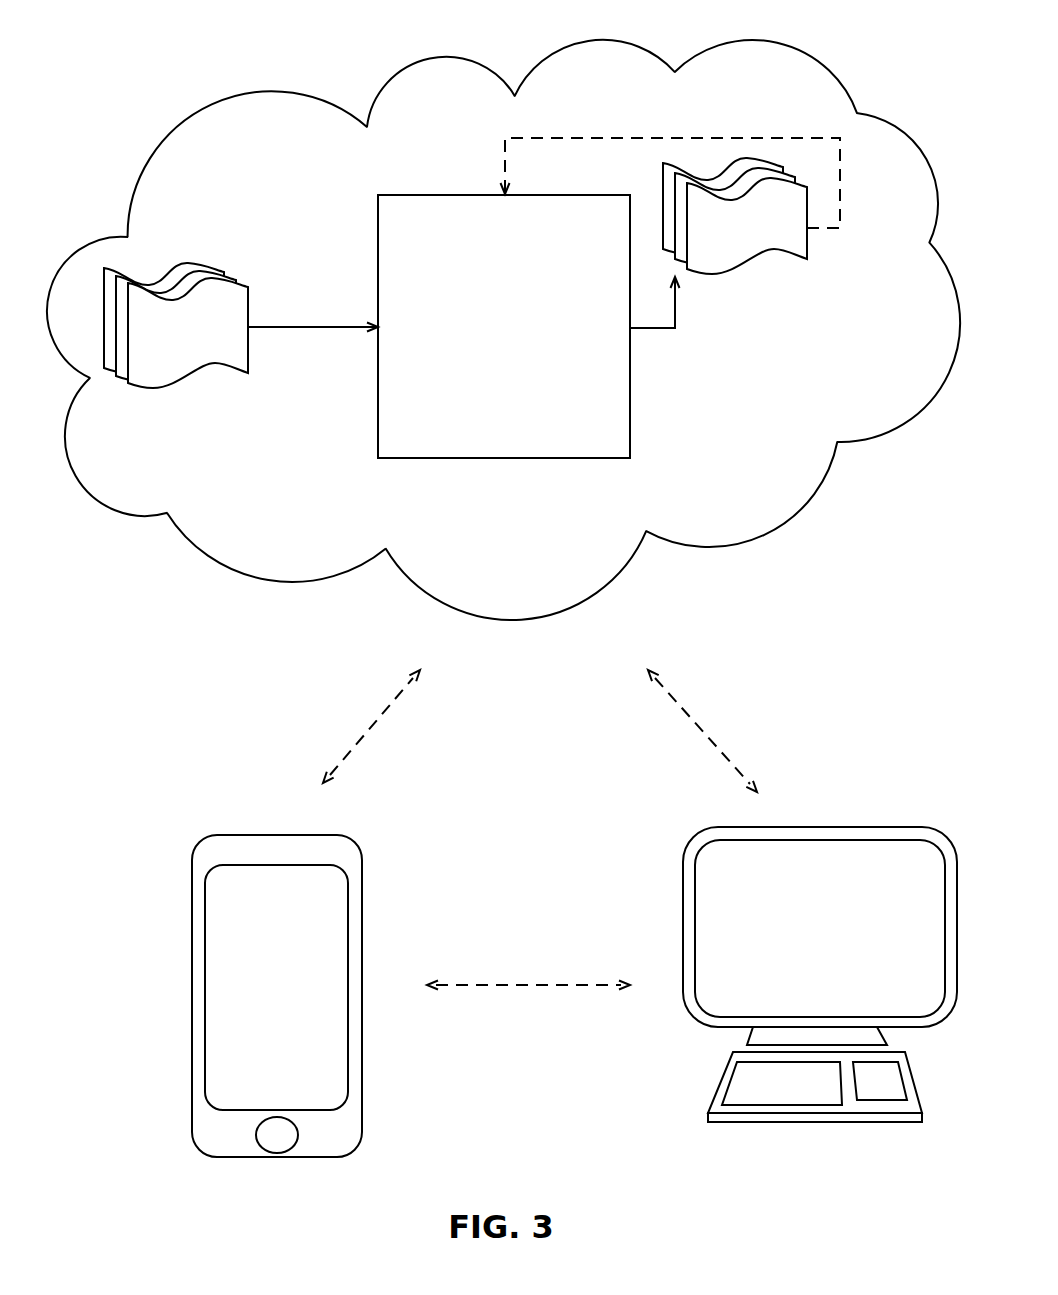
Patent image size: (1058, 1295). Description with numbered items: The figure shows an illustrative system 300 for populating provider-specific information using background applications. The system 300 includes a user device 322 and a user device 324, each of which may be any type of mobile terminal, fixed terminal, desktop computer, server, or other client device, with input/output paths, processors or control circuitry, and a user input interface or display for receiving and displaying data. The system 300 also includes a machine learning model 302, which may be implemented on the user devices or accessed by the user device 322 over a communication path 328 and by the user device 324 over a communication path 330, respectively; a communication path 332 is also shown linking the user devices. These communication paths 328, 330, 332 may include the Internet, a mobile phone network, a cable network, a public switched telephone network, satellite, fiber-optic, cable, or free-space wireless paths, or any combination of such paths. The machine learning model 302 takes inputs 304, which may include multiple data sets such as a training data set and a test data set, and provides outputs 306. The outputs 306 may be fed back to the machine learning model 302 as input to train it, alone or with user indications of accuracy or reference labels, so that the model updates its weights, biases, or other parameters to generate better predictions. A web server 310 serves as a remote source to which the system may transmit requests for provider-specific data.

The system 300 is at (481, 35).
The machine learning model 302 is at (580, 339).
The inputs 304 is at (197, 256).
The outputs 306 is at (787, 257).
The web server 310 is at (488, 552).
The user device 322 is at (267, 810).
The user device 324 is at (812, 820).
The communication path 328 is at (343, 697).
The communication path 330 is at (710, 682).
The communication path 332 is at (517, 953).